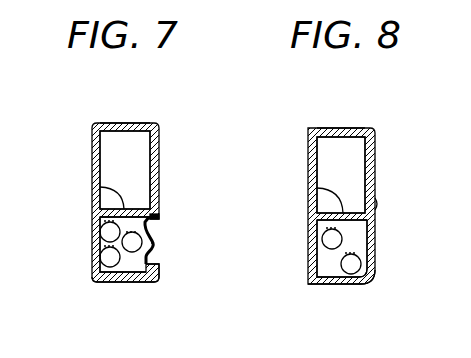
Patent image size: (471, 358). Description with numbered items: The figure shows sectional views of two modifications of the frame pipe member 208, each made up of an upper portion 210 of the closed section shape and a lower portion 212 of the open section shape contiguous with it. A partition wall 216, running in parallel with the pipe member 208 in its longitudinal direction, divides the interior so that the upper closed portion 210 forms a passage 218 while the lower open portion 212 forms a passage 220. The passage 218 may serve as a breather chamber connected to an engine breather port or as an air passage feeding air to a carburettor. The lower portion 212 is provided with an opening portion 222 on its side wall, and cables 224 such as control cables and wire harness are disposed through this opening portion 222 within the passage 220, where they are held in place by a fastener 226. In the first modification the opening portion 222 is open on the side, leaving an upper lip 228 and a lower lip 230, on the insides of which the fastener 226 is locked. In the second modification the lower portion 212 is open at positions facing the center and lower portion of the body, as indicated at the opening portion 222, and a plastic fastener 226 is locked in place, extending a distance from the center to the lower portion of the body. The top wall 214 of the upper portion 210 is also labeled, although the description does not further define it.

In FIG. 7, the pipe member 208 is at (170, 106).
In FIG. 8, the pipe member 208 is at (387, 110).
In FIG. 7, the portion of the closed section shape 210 is at (88, 141).
In FIG. 8, the portion of the closed section shape 210 is at (304, 147).
In FIG. 7, the portion of the open section shape 212 is at (88, 263).
In FIG. 8, the portion of the open section shape 212 is at (303, 272).
In FIG. 7, the top wall 214 is at (122, 124).
In FIG. 8, the top wall 214 is at (335, 128).
In FIG. 7, the partition wall 216 is at (100, 187).
In FIG. 8, the partition wall 216 is at (317, 188).
In FIG. 7, the passage 218 is at (116, 157).
In FIG. 8, the passage 218 is at (338, 163).
In FIG. 7, the passage 220 is at (130, 267).
In FIG. 8, the passage 220 is at (333, 273).
In FIG. 7, the opening portion 222 is at (158, 254).
In FIG. 8, the opening portion 222 is at (367, 240).
In FIG. 7, the cables 224 is at (98, 250).
In FIG. 8, the cables 224 is at (306, 258).
In FIG. 7, the fastener 226 is at (156, 238).
In FIG. 8, the fastener 226 is at (371, 265).
In FIG. 7, the upper lip 228 is at (158, 222).
In FIG. 7, the lower lip 230 is at (160, 267).